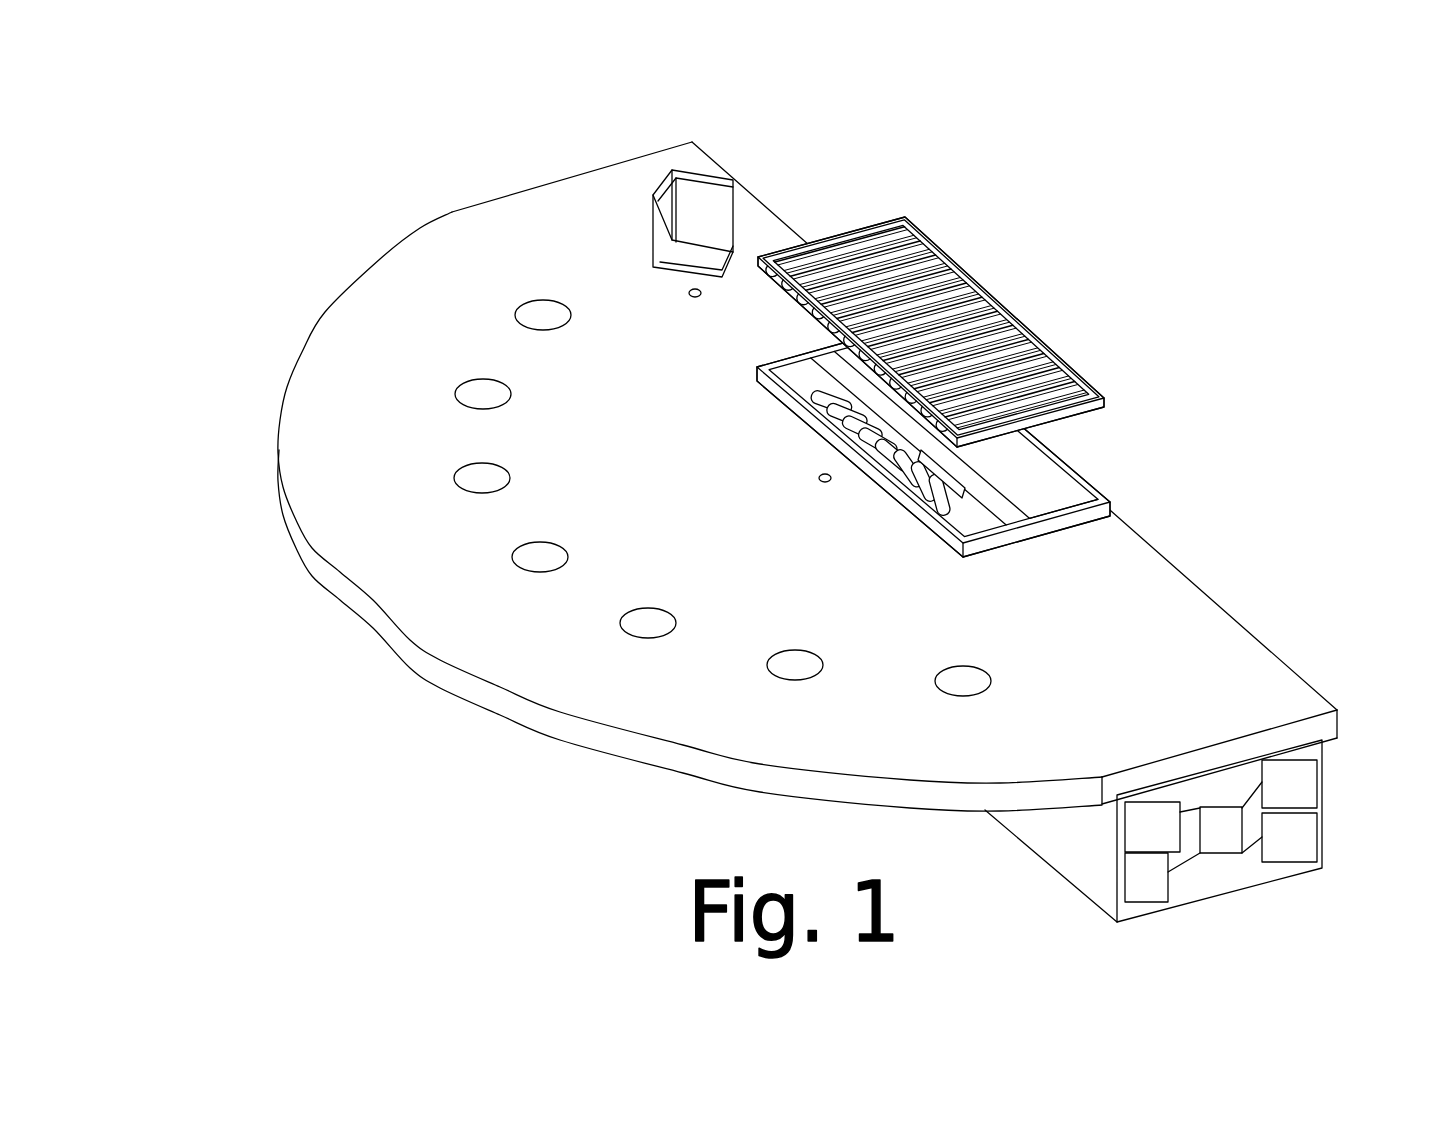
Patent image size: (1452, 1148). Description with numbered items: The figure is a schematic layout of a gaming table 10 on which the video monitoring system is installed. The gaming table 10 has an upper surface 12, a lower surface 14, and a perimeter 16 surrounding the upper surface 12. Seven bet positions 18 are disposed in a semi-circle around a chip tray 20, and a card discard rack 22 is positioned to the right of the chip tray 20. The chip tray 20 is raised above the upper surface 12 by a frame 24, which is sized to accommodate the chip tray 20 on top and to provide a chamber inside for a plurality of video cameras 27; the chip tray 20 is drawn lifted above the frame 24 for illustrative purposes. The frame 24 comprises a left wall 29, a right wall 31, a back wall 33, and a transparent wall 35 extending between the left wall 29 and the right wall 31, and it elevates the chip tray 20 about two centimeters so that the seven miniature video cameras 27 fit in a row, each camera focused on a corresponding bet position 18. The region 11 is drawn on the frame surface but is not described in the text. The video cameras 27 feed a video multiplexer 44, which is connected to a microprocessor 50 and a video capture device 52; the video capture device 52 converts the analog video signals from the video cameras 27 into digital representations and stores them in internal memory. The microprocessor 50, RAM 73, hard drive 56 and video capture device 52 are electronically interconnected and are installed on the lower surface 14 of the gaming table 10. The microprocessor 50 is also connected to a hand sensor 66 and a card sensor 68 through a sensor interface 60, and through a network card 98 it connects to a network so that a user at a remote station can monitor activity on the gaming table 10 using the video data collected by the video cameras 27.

The gaming table 10 is at (812, 518).
The tray surface region 11 is at (860, 408).
The upper surface 12 is at (807, 462).
The lower surface 14 is at (807, 630).
The perimeter 16 is at (785, 476).
The bet positions 18 is at (705, 498).
The chip tray 20 is at (931, 288).
The card discard rack 22 is at (733, 193).
The frame 24 is at (977, 444).
The video cameras 27 is at (835, 453).
The left wall 29 is at (974, 472).
The right wall 31 is at (901, 426).
The back wall 33 is at (1087, 472).
The transparent wall 35 is at (933, 481).
The video multiplexer 44 is at (975, 489).
The sensor interface 60 is at (941, 474).
The hand sensor 66 is at (646, 314).
The card sensor 68 is at (772, 497).
The microprocessor 50 is at (1260, 868).
The video capture device 52 is at (1118, 827).
The hard drive 56 is at (1184, 902).
The RAM 73 is at (1326, 780).
The network card 98 is at (1320, 856).